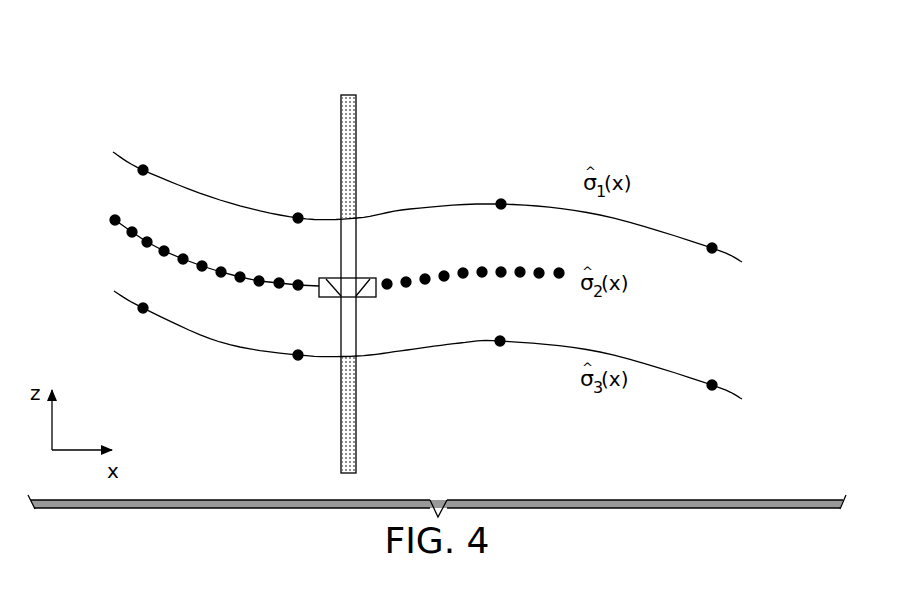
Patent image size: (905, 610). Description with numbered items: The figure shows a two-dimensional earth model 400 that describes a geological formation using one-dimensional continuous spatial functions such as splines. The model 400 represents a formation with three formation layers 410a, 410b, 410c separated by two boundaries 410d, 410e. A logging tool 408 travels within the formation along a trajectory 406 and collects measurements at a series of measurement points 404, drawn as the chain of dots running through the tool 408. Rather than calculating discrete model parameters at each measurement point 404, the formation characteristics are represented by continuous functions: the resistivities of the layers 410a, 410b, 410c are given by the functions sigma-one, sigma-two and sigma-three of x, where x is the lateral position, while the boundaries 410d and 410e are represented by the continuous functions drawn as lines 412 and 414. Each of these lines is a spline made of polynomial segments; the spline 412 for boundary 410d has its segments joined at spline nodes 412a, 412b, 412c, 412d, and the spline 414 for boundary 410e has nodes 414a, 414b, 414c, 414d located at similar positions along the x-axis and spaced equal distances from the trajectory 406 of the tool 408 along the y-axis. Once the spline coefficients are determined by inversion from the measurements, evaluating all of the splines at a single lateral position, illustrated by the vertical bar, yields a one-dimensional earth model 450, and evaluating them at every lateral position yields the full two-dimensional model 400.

The 2D earth model 400 is at (141, 80).
The measurement points 404 is at (153, 236).
The trajectory 406 is at (111, 207).
The logging tool 408 is at (332, 298).
The formation layer 410a is at (752, 191).
The formation layer 410b is at (750, 333).
The formation layer 410c is at (750, 464).
The boundary 410d is at (750, 256).
The boundary 410e is at (750, 399).
The spline 412 is at (410, 208).
The spline node 412a is at (170, 146).
The spline node 412b is at (298, 214).
The spline node 412c is at (501, 200).
The spline node 412d is at (712, 244).
The spline 414 is at (407, 353).
The spline node 414a is at (141, 312).
The spline node 414b is at (298, 360).
The spline node 414c is at (500, 346).
The spline node 414d is at (712, 390).
The 1D earth model 450 is at (356, 442).